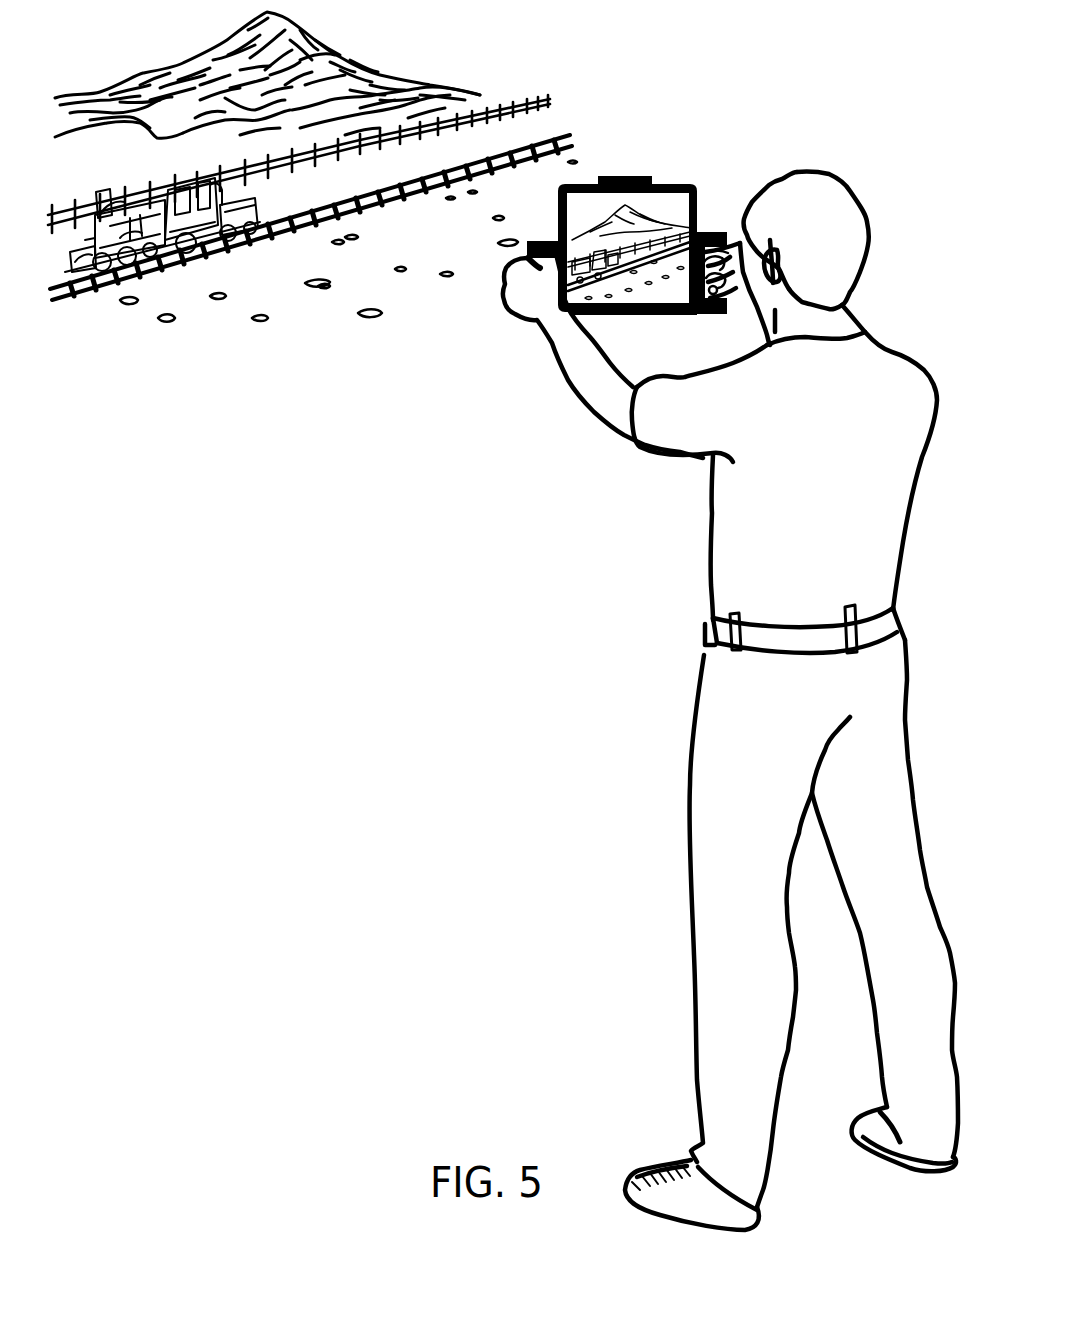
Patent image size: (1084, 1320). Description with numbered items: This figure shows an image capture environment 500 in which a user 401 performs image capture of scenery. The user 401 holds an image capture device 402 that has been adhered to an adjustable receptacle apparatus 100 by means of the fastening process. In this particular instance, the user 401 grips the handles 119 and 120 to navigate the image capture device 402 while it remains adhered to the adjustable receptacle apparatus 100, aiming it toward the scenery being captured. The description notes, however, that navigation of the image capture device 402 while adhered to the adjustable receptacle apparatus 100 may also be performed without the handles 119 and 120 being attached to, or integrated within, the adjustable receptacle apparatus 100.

The image capture environment 500 is at (818, 86).
The adjustable receptacle apparatus 100 is at (641, 160).
The image capture device 402 is at (662, 182).
The handle 120 is at (543, 243).
The handle 119 is at (712, 232).
The user 401 is at (877, 357).